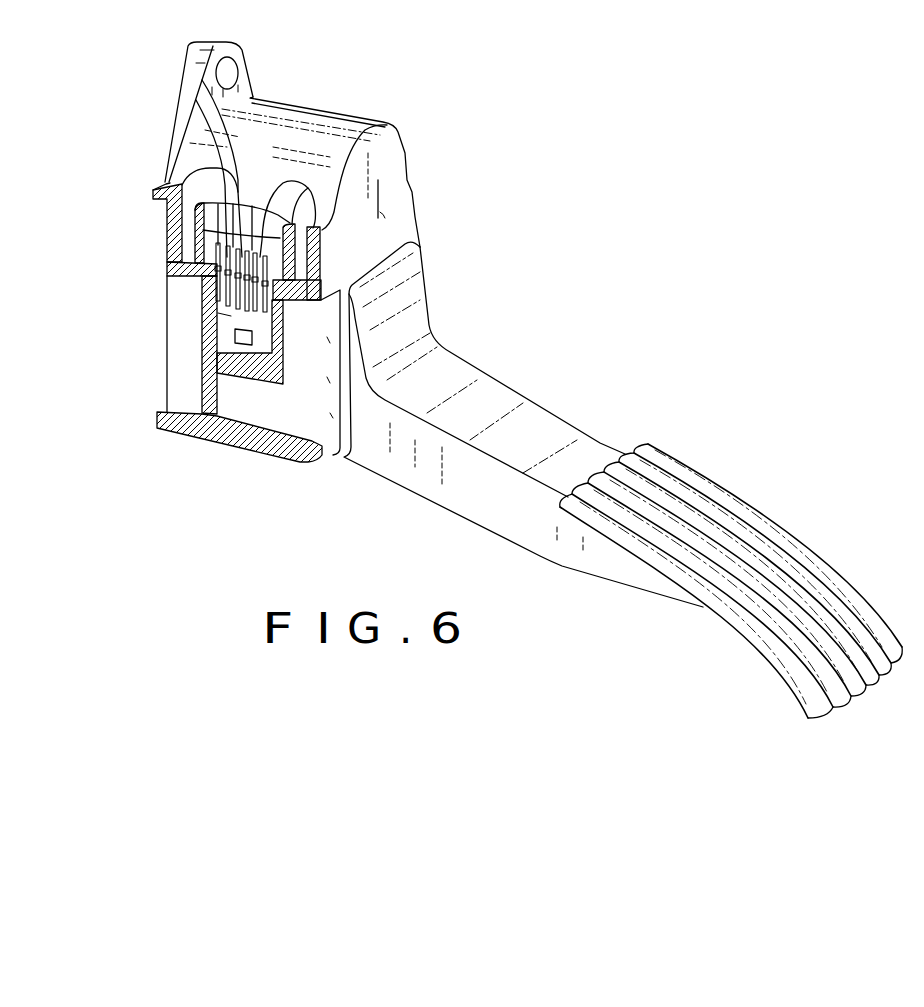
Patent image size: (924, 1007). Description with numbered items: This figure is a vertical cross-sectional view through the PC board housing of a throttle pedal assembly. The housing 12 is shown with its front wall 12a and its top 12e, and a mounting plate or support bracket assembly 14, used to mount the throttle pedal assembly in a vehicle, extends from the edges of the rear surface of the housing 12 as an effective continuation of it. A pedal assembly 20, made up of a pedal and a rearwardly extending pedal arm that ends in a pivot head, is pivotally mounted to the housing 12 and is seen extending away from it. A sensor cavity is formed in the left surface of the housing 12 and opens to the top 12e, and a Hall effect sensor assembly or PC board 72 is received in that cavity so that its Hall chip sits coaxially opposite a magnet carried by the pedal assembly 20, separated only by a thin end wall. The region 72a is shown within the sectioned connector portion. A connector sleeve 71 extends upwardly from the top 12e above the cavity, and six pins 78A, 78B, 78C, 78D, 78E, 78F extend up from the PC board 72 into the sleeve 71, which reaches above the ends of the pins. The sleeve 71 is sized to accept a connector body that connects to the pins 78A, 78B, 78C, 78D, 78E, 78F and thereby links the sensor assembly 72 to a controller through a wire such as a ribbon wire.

The housing 12 is at (400, 115).
The front wall 12a is at (380, 212).
The top 12e is at (283, 125).
The mounting plate or support bracket assembly 14 is at (255, 71).
The pedal assembly 20 is at (560, 393).
The connector sleeve 71 is at (194, 223).
The Hall effect sensor assembly or PC board 72 is at (230, 315).
The connector cavity 72a is at (205, 268).
The pin 78A is at (158, 186).
The pin 78B is at (210, 172).
The pin 78C is at (207, 140).
The pin 78D is at (207, 104).
The pin 78E is at (260, 167).
The pin 78F is at (300, 183).